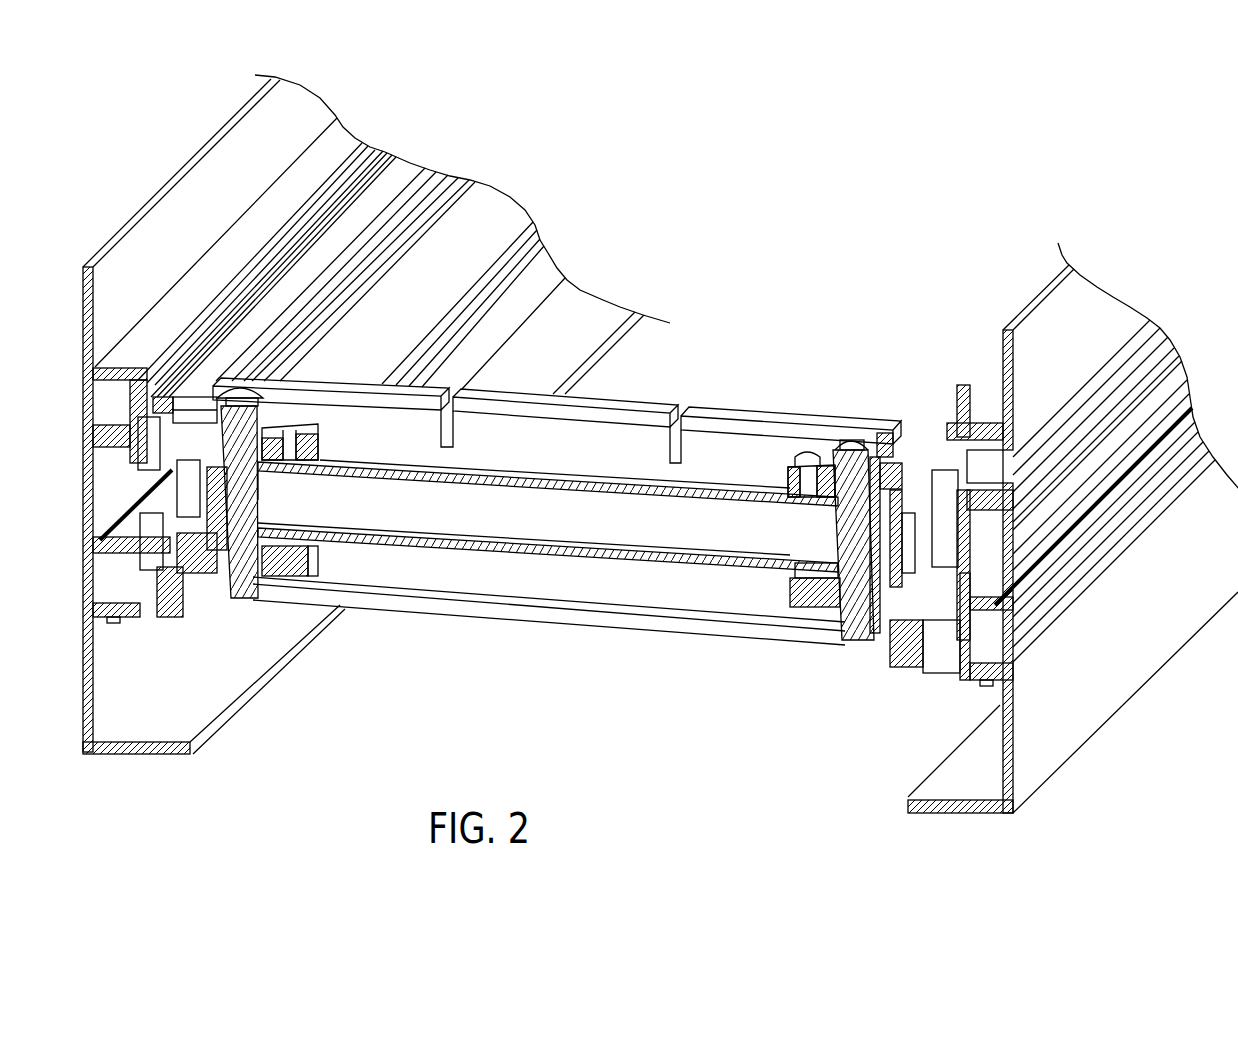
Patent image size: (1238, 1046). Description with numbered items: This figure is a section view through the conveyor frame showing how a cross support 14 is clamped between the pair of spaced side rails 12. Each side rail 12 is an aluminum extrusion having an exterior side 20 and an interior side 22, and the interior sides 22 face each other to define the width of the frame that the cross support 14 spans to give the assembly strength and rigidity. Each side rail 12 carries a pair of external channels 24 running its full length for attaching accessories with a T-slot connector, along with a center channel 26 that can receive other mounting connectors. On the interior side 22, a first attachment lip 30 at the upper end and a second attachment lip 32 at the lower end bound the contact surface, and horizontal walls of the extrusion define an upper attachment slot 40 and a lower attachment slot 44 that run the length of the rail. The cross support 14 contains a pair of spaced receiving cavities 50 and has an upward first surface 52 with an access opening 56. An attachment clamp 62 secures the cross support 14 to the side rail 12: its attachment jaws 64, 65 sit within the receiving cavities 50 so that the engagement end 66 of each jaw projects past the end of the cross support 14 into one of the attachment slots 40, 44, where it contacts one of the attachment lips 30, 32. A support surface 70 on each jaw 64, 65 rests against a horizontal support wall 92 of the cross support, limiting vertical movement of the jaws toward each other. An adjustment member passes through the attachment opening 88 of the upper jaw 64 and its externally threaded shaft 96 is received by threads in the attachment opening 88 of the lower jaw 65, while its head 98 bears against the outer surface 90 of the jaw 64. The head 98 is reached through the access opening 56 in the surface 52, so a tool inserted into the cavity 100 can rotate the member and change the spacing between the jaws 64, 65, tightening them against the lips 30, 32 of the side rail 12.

The side rail 12 is at (78, 727).
The cross support 14 is at (743, 403).
The exterior side 20 is at (1113, 297).
The interior side 22 is at (497, 207).
The external channel 24 is at (987, 443).
The center channel 26 is at (918, 645).
The first attachment lip 30 is at (203, 453).
The second attachment lip 32 is at (200, 540).
The upper attachment slot 40 is at (187, 402).
The lower attachment slot 44 is at (180, 577).
The receiving cavity 50 is at (560, 453).
The first surface 52 is at (643, 407).
The access opening 56 is at (850, 432).
The attachment clamp 62 is at (787, 630).
The attachment jaw 64 is at (308, 420).
The attachment jaw 65 is at (310, 556).
The engagement end 66 is at (188, 447).
The support surface 70 is at (805, 573).
The attachment opening 88 is at (262, 430).
The outer surface 90 is at (817, 457).
The horizontal support wall 92 is at (720, 493).
The externally threaded shaft 96 is at (257, 487).
The head 98 is at (835, 440).
The cavity 100 is at (853, 438).